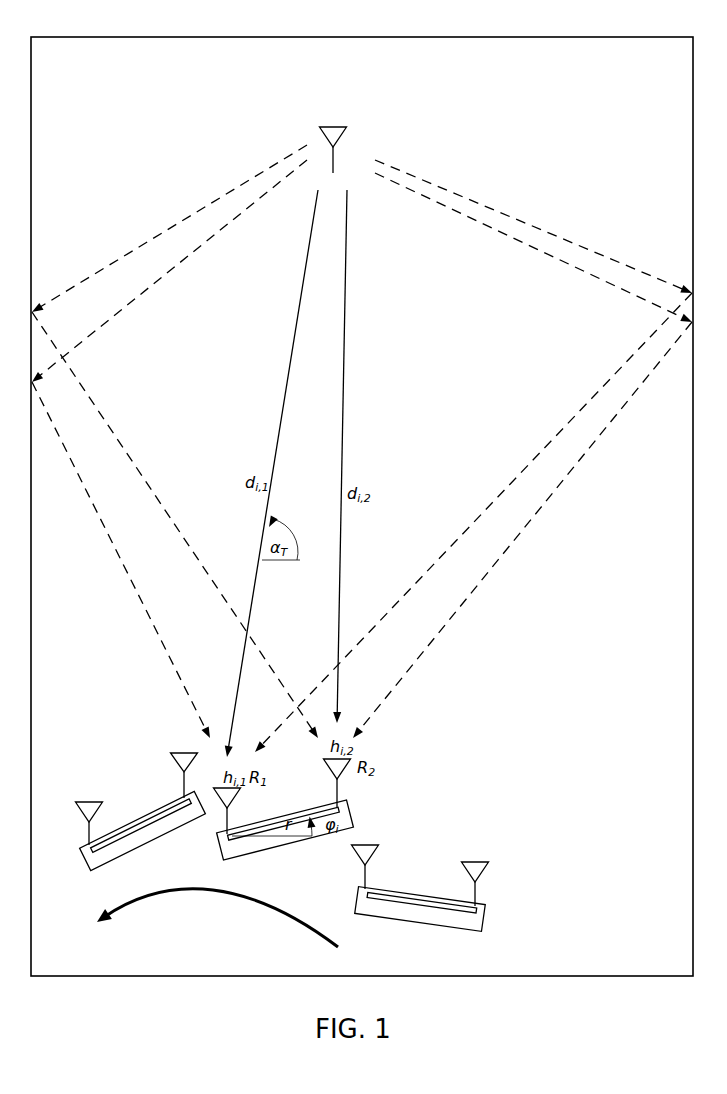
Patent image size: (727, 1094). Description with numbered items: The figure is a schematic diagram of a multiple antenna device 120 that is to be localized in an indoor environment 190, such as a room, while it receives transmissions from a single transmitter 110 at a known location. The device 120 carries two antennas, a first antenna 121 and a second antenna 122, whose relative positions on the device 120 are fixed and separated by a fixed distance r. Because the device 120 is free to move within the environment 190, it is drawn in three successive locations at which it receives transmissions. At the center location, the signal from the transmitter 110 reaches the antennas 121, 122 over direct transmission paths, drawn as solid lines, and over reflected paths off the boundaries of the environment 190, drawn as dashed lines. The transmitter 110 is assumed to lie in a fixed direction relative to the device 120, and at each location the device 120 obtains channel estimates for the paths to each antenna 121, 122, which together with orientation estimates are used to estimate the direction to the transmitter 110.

The indoor environment 190 is at (128, 37).
The transmitter 110 is at (350, 117).
The device 120 is at (149, 847).
The first antenna 121 is at (92, 800).
The second antenna 122 is at (175, 772).